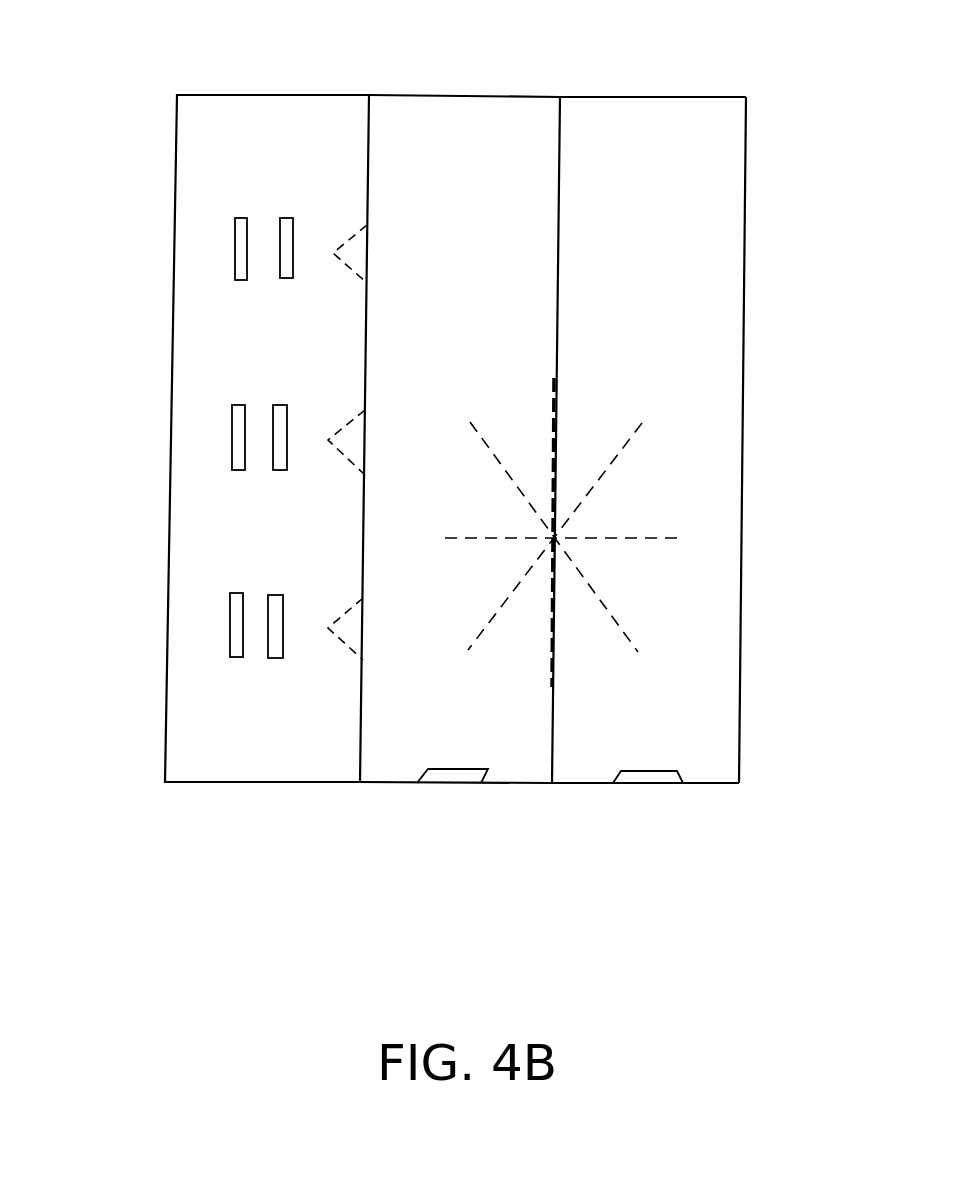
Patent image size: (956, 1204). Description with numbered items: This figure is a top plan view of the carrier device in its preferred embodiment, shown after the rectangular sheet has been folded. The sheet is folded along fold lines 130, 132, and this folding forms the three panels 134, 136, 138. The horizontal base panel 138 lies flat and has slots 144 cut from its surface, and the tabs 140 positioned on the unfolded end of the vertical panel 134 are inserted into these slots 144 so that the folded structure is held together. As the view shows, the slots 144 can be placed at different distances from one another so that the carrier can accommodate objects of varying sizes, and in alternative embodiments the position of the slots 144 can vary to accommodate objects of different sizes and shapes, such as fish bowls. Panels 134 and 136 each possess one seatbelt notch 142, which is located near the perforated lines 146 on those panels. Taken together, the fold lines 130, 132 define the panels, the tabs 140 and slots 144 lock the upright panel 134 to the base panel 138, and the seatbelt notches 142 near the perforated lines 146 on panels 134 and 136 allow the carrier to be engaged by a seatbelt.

The fold line 130 is at (557, 193).
The fold line 132 is at (740, 202).
The panel 134 is at (463, 110).
The panel 136 is at (648, 110).
The horizontal base panel 138 is at (265, 107).
The tabs 140 is at (343, 237).
The seatbelt notch 142 is at (647, 795).
The slots 144 is at (227, 287).
The perforated lines 146 is at (647, 630).